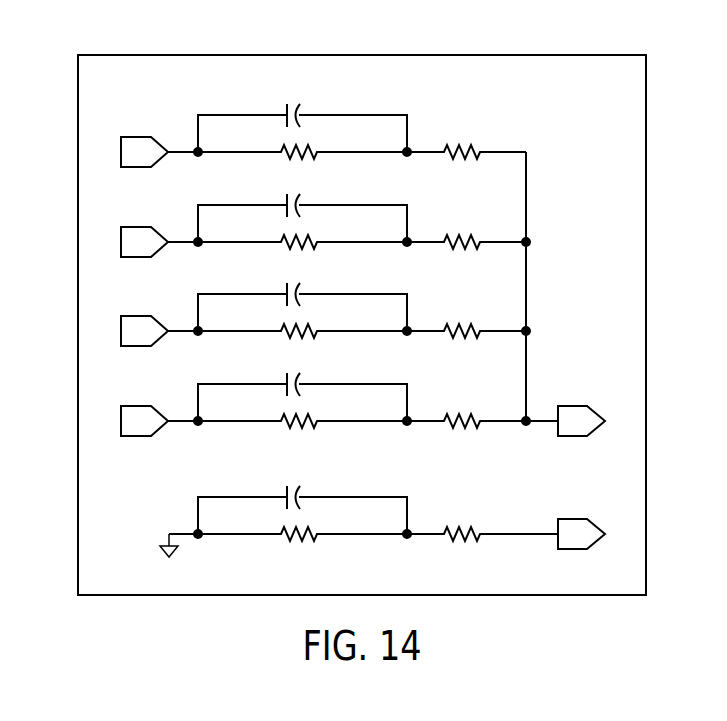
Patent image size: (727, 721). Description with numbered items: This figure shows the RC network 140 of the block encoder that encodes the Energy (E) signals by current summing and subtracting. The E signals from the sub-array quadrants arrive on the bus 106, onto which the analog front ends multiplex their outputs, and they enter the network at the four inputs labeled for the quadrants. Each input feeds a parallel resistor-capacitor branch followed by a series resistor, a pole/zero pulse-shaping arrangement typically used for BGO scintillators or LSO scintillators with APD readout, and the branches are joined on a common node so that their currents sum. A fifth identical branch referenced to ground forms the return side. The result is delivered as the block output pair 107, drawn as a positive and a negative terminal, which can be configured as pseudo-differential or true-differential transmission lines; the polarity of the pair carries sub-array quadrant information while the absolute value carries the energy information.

The RC network 140 is at (49, 63).
The bus 106 is at (108, 242).
The block output T/L/E pairs 107 is at (620, 534).